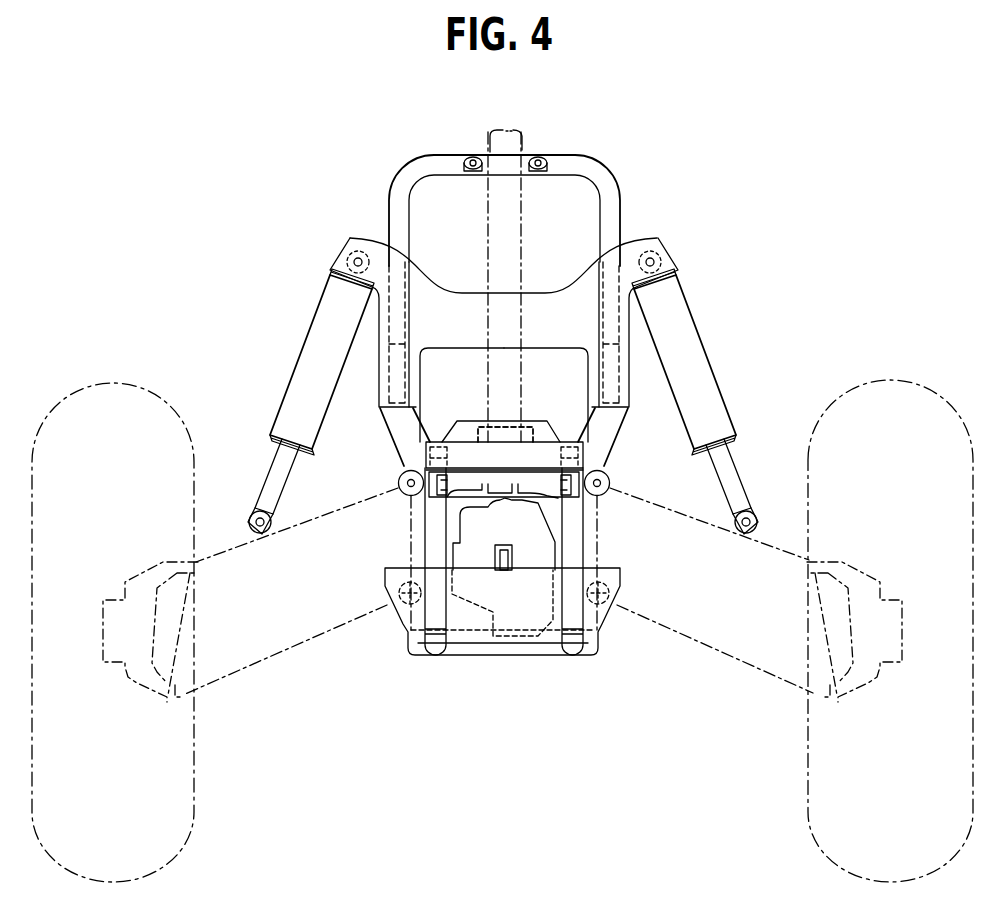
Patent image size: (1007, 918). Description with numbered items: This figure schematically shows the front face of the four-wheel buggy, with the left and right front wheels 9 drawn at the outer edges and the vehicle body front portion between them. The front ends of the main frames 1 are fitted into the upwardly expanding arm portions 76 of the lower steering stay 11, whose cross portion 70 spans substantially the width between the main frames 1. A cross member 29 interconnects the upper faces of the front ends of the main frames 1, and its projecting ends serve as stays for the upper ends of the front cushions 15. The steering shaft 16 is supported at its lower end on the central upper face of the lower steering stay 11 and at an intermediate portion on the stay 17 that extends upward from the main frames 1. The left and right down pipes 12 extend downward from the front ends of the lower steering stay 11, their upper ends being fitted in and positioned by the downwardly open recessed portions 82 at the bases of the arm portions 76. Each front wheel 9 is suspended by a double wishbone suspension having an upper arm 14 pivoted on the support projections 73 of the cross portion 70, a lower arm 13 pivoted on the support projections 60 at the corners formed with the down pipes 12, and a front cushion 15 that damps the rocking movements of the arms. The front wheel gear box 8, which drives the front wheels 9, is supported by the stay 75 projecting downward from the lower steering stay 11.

The main frame 1 is at (377, 380).
The front wheel gear box 8 is at (545, 552).
The front wheel 9 is at (82, 385).
The lower steering stay 11 is at (531, 420).
The down pipe 12 is at (433, 540).
The lower arm 13 is at (338, 628).
The upper arm 14 is at (300, 528).
The front cushion 15 is at (320, 312).
The steering shaft 16 is at (522, 222).
The stay 17 is at (604, 180).
The cross member 29 is at (460, 296).
The support projection 60 is at (383, 583).
The cross portion 70 is at (468, 419).
The support projection 73 is at (400, 470).
The stay 75 is at (427, 505).
The arm portion 76 is at (387, 425).
The recessed portion 82 is at (449, 442).